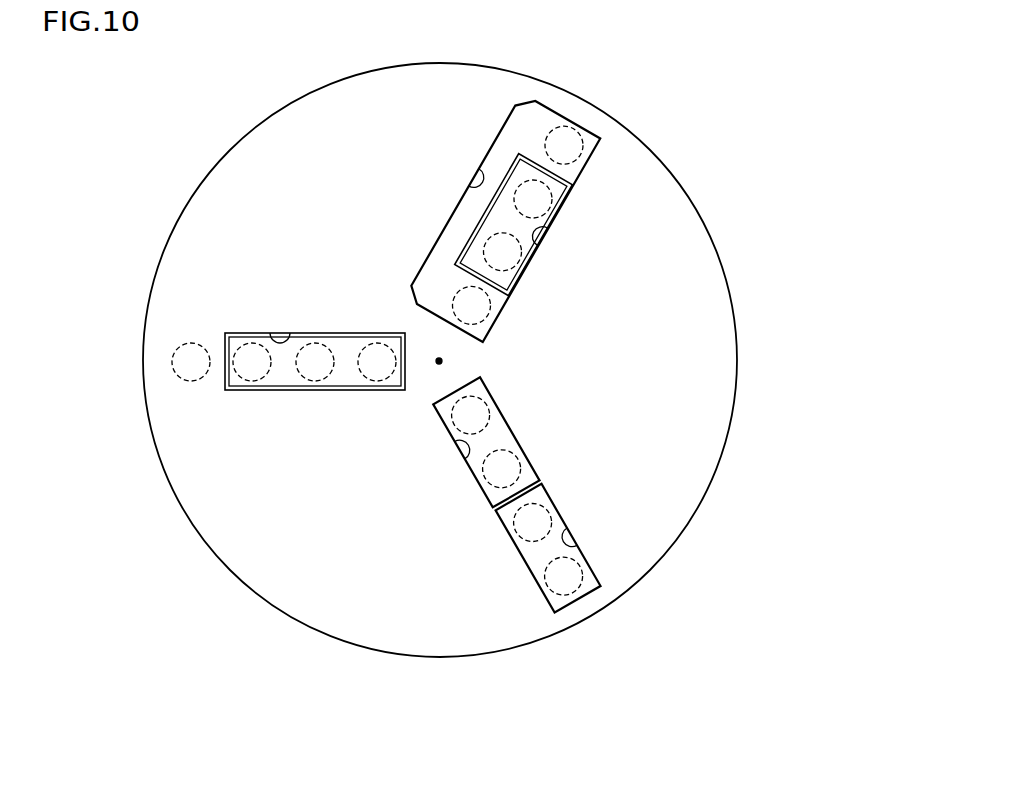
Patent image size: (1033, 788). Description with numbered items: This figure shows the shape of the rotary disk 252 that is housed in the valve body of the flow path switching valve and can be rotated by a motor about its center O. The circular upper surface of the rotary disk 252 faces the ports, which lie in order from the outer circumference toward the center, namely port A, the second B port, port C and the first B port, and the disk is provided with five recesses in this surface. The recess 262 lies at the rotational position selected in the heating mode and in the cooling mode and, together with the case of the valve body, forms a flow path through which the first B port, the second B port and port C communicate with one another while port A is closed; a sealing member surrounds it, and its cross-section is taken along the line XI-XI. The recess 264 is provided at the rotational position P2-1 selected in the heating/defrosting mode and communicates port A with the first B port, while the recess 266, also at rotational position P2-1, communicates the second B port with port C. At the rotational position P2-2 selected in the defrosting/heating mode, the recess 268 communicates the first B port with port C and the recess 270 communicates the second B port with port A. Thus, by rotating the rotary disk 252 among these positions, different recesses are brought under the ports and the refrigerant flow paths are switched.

The rotary disk 252 is at (710, 242).
The rotation center O is at (442, 362).
The recess 262 is at (276, 342).
The recess 264 is at (474, 168).
The recess 266 is at (547, 230).
The recess 268 is at (470, 462).
The recess 270 is at (576, 543).
The rotational position P2-1 is at (598, 166).
The rotational position P2-2 is at (532, 597).
The section line XI is at (113, 363).